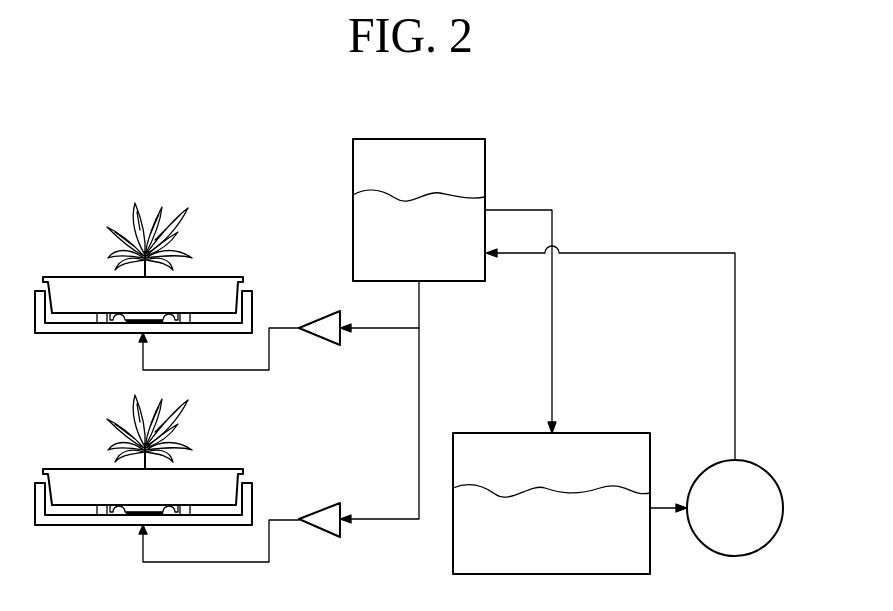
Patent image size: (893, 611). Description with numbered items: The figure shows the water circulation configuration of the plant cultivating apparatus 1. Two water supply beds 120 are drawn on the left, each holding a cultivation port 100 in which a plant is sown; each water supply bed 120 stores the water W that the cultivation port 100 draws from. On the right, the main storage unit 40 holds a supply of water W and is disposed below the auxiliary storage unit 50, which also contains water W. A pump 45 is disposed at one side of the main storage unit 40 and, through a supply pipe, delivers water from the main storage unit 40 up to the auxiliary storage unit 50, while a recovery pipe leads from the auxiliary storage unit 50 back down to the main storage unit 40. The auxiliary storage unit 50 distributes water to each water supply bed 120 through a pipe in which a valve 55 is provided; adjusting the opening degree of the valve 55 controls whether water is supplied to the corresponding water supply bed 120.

The plant cultivating apparatus 1 is at (60, 96).
The main storage unit 40 is at (603, 432).
The pump 45 is at (759, 464).
The auxiliary storage unit 50 is at (425, 138).
The valve 55 is at (316, 319).
The cultivation port 100 is at (57, 277).
The water supply bed 120 is at (63, 334).
The water W is at (358, 207).